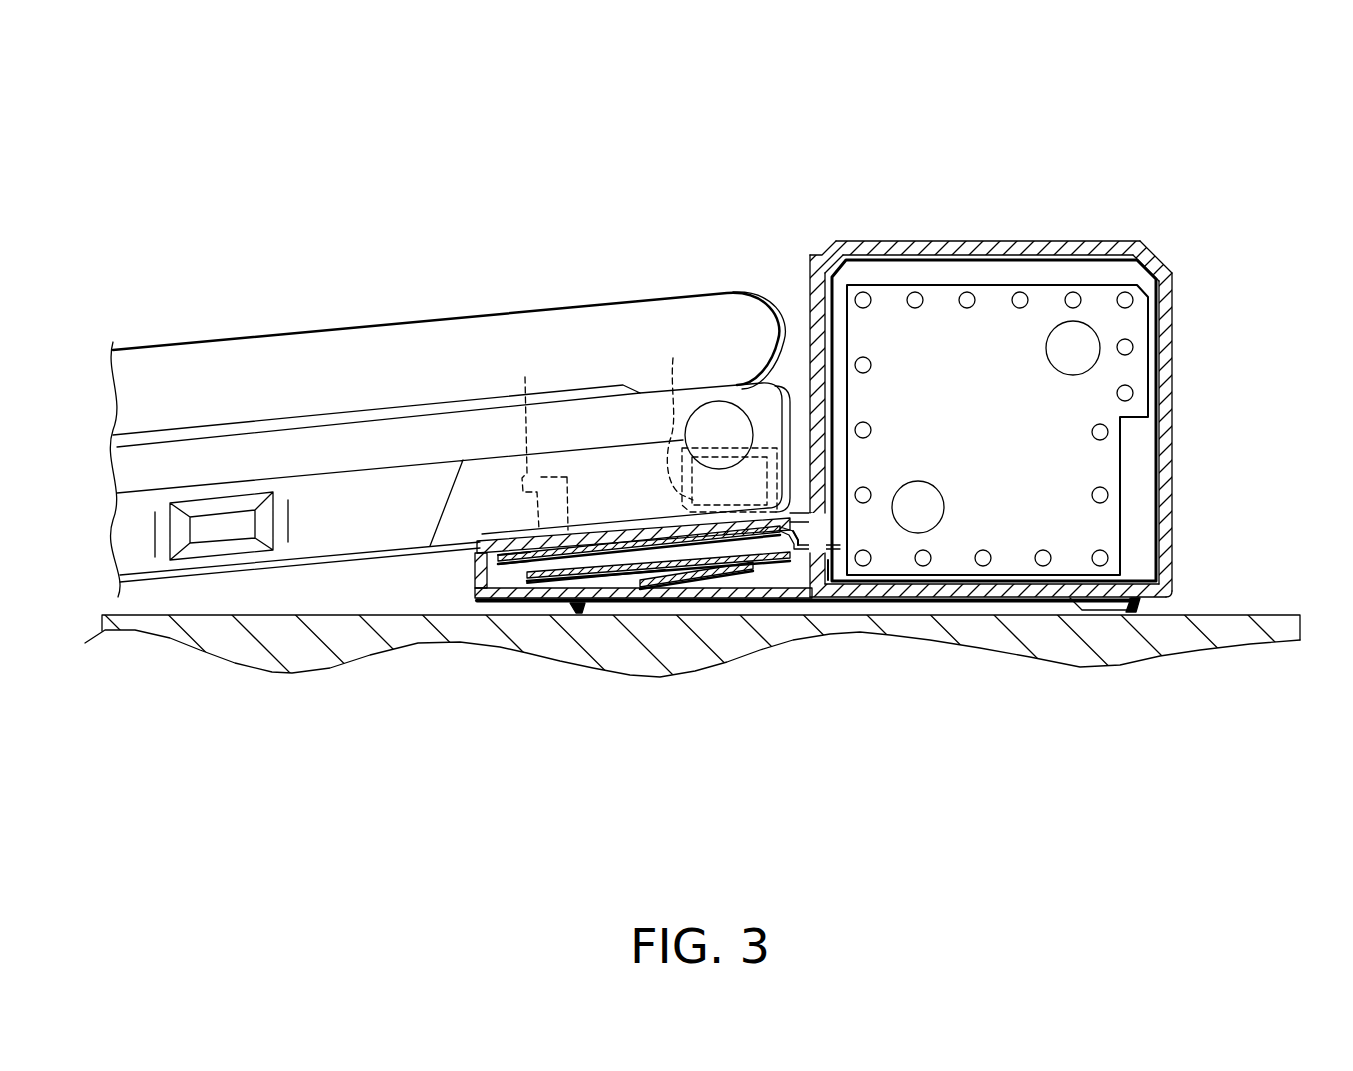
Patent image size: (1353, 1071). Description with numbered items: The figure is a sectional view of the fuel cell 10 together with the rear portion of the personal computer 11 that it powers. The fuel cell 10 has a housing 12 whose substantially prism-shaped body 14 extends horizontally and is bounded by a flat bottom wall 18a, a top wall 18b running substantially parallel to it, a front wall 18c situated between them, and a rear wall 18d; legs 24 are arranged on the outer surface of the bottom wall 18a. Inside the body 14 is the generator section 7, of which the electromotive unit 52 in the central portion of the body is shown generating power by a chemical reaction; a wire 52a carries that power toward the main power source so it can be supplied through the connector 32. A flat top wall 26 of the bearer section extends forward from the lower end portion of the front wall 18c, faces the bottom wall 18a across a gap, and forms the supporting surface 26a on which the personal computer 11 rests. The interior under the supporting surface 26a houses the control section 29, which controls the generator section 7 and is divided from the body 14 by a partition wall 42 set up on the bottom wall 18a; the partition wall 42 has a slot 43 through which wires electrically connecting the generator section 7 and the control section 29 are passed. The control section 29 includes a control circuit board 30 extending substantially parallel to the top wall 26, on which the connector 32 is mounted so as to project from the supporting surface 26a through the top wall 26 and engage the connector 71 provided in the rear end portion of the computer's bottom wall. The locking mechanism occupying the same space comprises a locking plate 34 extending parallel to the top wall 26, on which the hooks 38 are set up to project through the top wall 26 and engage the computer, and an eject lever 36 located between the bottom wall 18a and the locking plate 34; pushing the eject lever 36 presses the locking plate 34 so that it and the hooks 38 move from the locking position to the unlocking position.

The generator section 7 is at (1093, 464).
The fuel cell 10 is at (867, 213).
The personal computer 11 is at (340, 330).
The housing 12 is at (1052, 212).
The body 14 is at (1134, 223).
The bottom wall 18a is at (966, 600).
The top wall 18b is at (946, 241).
The front wall 18c is at (817, 260).
The rear wall 18d is at (1172, 555).
The legs 24 is at (537, 603).
The top wall 26 is at (617, 565).
The supporting surface 26a is at (602, 533).
The control section 29 is at (487, 603).
The control circuit board 30 is at (688, 562).
The connector 32 is at (693, 503).
The locking plate 34 is at (600, 582).
The eject lever 36 is at (750, 574).
The hooks 38 is at (538, 435).
The partition wall 42 is at (843, 540).
The slot 43 is at (797, 560).
The electromotive unit 52 is at (1093, 385).
The wire 52a is at (830, 575).
The connector 71 is at (674, 410).